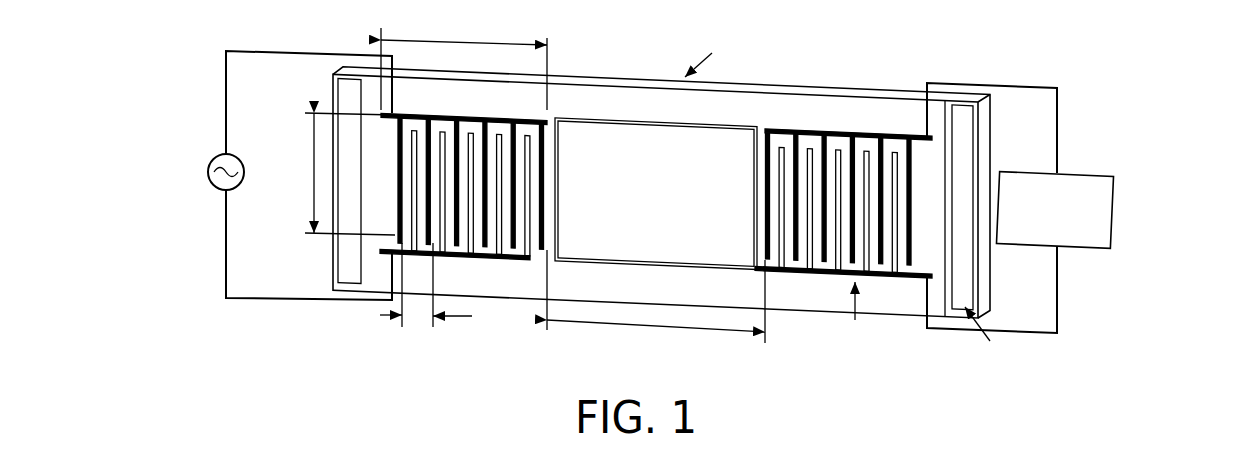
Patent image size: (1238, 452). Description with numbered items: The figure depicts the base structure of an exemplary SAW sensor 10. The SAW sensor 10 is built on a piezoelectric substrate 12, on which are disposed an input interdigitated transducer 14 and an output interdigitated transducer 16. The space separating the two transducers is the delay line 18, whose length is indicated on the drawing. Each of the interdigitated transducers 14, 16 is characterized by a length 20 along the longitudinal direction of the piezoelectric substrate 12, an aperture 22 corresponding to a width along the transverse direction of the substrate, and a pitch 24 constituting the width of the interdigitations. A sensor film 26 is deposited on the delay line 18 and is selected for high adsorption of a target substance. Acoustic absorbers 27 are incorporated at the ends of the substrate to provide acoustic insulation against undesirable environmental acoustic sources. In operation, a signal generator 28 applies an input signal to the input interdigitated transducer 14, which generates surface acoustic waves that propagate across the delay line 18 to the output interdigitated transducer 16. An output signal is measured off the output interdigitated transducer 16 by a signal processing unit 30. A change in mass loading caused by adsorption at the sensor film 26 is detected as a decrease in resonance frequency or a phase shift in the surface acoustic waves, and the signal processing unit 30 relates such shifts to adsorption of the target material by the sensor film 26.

The SAW sensor 10 is at (188, 86).
The piezoelectric substrate 12 is at (862, 96).
The input interdigitated transducer 14 is at (480, 258).
The output interdigitated transducer 16 is at (890, 278).
The delay line 18 is at (563, 278).
The length 20 is at (478, 6).
The aperture 22 is at (309, 192).
The pitch 24 is at (404, 390).
The sensor film 26 is at (728, 252).
The acoustic absorbers 27 is at (975, 272).
The signal generator 28 is at (208, 172).
The signal processing unit 30 is at (1112, 210).